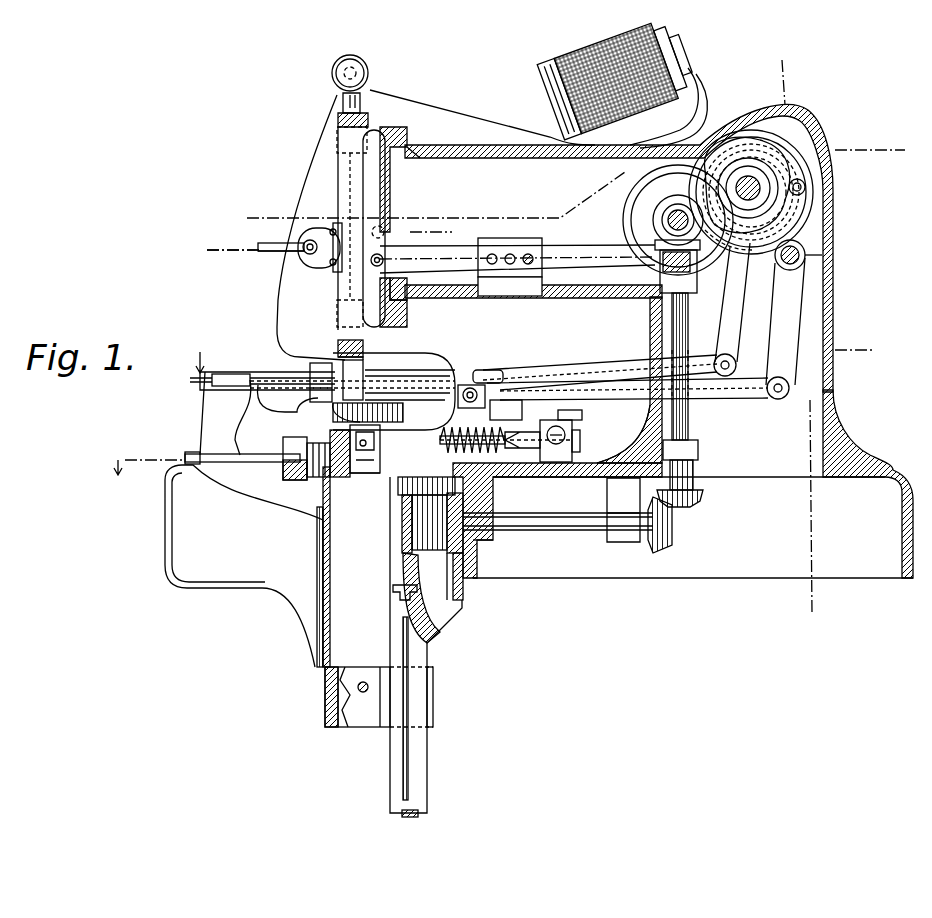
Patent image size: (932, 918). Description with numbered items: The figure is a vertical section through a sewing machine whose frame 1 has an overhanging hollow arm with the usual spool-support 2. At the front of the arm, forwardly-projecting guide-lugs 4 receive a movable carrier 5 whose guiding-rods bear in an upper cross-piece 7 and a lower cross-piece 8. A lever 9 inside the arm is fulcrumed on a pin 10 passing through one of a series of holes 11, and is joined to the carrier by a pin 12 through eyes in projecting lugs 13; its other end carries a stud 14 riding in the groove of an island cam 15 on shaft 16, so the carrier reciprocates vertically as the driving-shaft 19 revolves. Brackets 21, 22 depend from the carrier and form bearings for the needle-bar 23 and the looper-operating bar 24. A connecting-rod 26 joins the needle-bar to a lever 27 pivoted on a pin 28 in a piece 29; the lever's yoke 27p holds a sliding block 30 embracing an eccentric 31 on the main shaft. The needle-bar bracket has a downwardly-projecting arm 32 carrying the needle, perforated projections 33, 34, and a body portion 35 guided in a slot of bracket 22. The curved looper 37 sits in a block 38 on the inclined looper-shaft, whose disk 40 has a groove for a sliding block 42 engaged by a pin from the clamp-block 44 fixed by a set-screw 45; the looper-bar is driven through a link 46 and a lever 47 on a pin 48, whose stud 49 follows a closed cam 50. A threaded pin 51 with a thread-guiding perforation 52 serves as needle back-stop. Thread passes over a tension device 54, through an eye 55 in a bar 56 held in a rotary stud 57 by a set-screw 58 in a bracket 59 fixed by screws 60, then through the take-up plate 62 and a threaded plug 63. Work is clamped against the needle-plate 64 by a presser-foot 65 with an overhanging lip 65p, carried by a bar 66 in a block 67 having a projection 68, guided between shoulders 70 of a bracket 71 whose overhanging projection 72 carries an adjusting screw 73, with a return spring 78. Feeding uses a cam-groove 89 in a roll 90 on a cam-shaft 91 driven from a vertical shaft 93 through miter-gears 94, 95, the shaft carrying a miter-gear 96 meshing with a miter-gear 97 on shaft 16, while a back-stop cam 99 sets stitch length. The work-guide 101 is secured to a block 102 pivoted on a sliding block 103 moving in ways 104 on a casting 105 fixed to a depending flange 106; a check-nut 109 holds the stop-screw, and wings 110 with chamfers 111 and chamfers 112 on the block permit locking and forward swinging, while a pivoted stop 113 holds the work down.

The frame 1 is at (833, 320).
The spool-support 2 is at (692, 90).
The guide-lugs 4 is at (385, 140).
The movable frame or carrier 5 is at (365, 228).
The cross-piece 7 is at (338, 119).
The cross-piece 8 is at (350, 341).
The lever 9 is at (517, 259).
The fulcrum-pin 10 is at (373, 243).
The holes 11 is at (545, 258).
The pin 12 is at (376, 230).
The projecting lugs 13 is at (374, 273).
The stud 14 is at (695, 270).
The closed or island cam 15 is at (625, 236).
The shaft 16 is at (653, 220).
The driving-shaft 19 is at (760, 182).
The bracket 21 is at (452, 352).
The bracket 22 is at (307, 211).
The needle-bar 23 is at (270, 370).
The looper-operating bar 24 is at (405, 385).
The link or connecting-rod 26 is at (615, 368).
The lever 27 is at (735, 300).
The yoke 27p is at (790, 150).
The stud or pin 28 is at (790, 257).
The piece or boss 29 is at (815, 256).
The sliding block 30 is at (805, 180).
The eccentric 31 is at (780, 208).
The downwardly-projecting arm 32 is at (242, 408).
The perforated projection 33 is at (256, 372).
The perforated projection 34 is at (366, 356).
The longitudinal body portion 35 is at (297, 410).
The curved looper 37 is at (362, 476).
The block 38 is at (368, 473).
The circular plate or disk 40 is at (368, 410).
The sliding block 42 is at (340, 412).
The clamp-block 44 is at (321, 382).
The set-screw 45 is at (365, 378).
The connecting rod or link 46 is at (614, 400).
The lever 47 is at (785, 328).
The pin 48 is at (803, 270).
The stud 49 is at (806, 190).
The closed cam 50 is at (768, 130).
The pin 51 is at (186, 456).
The perforation 52 is at (205, 454).
The tension device 54 is at (372, 76).
The eye 55 is at (258, 243).
The bar 56 is at (262, 252).
The rotary stud 57 is at (305, 232).
The set-screw 58 is at (308, 255).
The bracket 59 is at (332, 230).
The screws 60 is at (340, 230).
The bar or plate 62 is at (296, 355).
The threaded plug 63 is at (200, 379).
The needle-plate 64 is at (342, 478).
The presser-foot 65 is at (284, 448).
The overhanging lip 65p is at (290, 480).
The rod or bar 66 is at (518, 448).
The block 67 is at (530, 430).
The projection 68 is at (574, 448).
The shoulders 70 is at (584, 404).
The bracket 71 is at (530, 385).
The overhanging projection 72 is at (471, 401).
The screw 73 is at (500, 412).
The spring 78 is at (478, 448).
The cam-groove 89 is at (445, 520).
The roll 90 is at (422, 510).
The cam-shaft 91 is at (556, 530).
The vertical shaft 93 is at (690, 430).
The miter-gear 94 is at (672, 526).
The miter-gear 95 is at (703, 500).
The miter-gear 96 is at (730, 258).
The miter-gear 97 is at (674, 205).
The back-stop cam 99 is at (400, 490).
The work-guide 101 is at (244, 566).
The block 102 is at (330, 682).
The sliding block 103 is at (356, 664).
The ways 104 is at (410, 778).
The casting 105 is at (433, 598).
The depending flange 106 is at (480, 548).
The check-nut 109 is at (393, 588).
The wings 110 is at (420, 668).
The chamfers 111 is at (410, 712).
The chamfers 112 is at (330, 706).
The pivoted guide or stop 113 is at (318, 478).